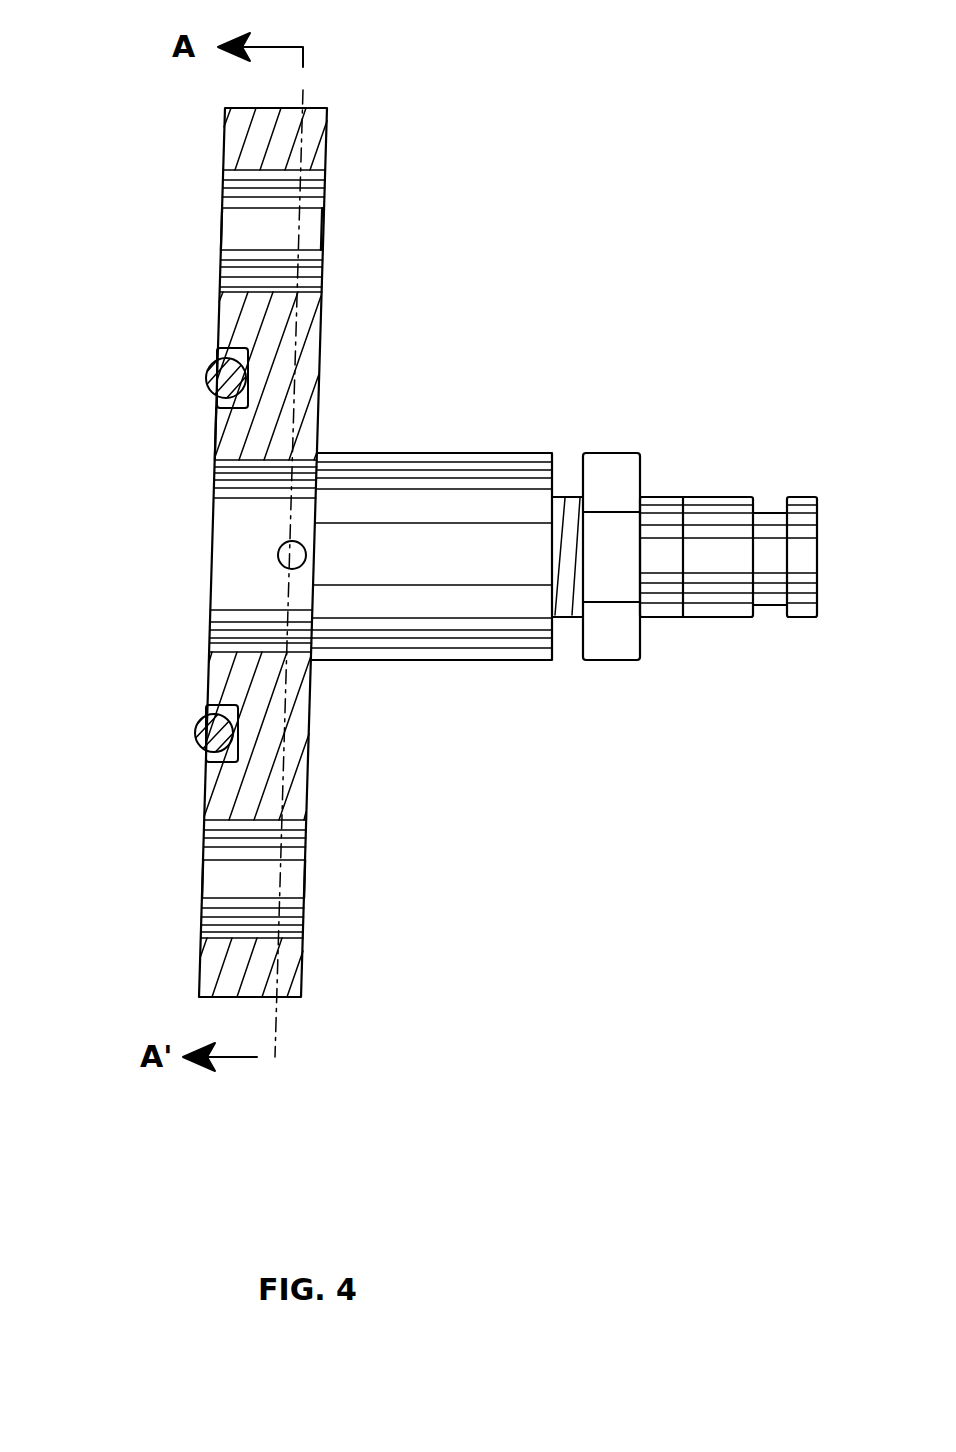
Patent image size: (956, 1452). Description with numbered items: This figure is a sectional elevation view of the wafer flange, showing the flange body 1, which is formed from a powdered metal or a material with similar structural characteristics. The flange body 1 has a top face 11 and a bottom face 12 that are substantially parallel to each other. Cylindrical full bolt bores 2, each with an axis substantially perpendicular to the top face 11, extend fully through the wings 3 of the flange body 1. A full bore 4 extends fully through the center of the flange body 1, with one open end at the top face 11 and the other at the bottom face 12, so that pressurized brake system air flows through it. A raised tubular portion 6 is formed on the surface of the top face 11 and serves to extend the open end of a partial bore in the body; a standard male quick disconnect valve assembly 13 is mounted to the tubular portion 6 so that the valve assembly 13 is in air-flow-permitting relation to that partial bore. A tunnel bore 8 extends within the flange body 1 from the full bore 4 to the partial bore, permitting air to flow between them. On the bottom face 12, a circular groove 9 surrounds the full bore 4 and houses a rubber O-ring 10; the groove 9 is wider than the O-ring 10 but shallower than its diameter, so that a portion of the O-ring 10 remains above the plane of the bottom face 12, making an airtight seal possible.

The flange body 1 is at (313, 140).
The full bolt bores 2 is at (312, 224).
The wings 3 is at (262, 118).
The full bore 4 is at (305, 472).
The raised tubular portion 6 is at (520, 464).
The tunnel bore 8 is at (297, 553).
The circular groove 9 is at (222, 350).
The O-ring 10 is at (208, 377).
The top face 11 is at (320, 362).
The bottom face 12 is at (220, 432).
The male quick disconnect valve assembly 13 is at (697, 506).